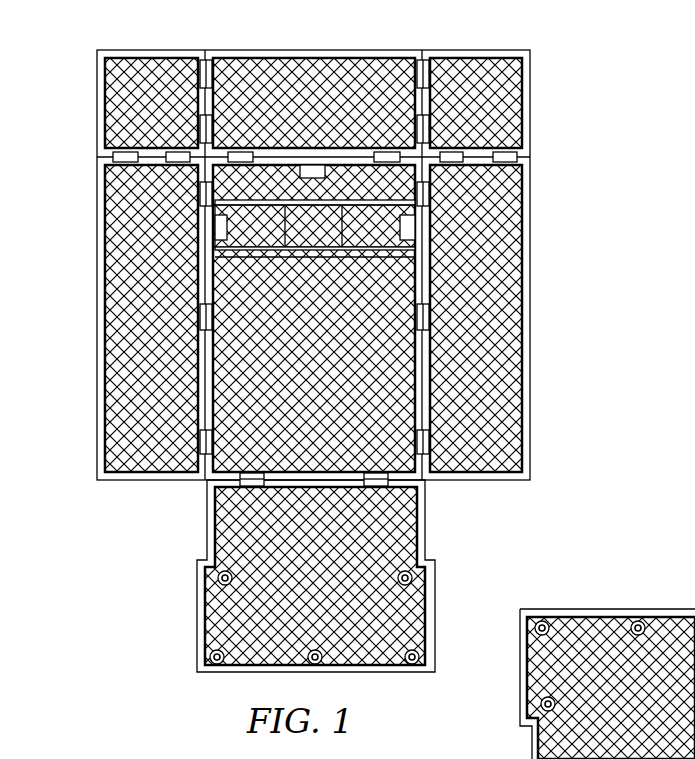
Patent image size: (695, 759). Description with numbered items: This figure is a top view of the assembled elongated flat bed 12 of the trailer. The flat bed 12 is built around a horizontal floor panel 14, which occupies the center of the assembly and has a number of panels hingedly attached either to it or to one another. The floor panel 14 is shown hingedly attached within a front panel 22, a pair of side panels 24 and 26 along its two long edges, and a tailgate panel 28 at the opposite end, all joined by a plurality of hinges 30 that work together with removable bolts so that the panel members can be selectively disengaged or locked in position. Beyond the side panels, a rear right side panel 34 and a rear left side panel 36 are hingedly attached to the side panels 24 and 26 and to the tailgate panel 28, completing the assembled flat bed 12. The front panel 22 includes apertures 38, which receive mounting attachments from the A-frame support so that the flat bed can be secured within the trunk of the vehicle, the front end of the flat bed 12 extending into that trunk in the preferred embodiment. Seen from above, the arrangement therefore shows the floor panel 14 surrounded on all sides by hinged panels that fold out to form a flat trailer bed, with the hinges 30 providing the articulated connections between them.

The elongated flat bed 12 is at (556, 252).
The horizontal floor panel 14 is at (381, 425).
The front panel 22 is at (390, 623).
The side panel 24 is at (487, 385).
The side panel 26 is at (140, 375).
The tailgate panel 28 is at (340, 97).
The hinges 30 is at (183, 460).
The rear right side panel 34 is at (490, 102).
The rear left side panel 36 is at (150, 82).
The apertures 38 is at (398, 576).